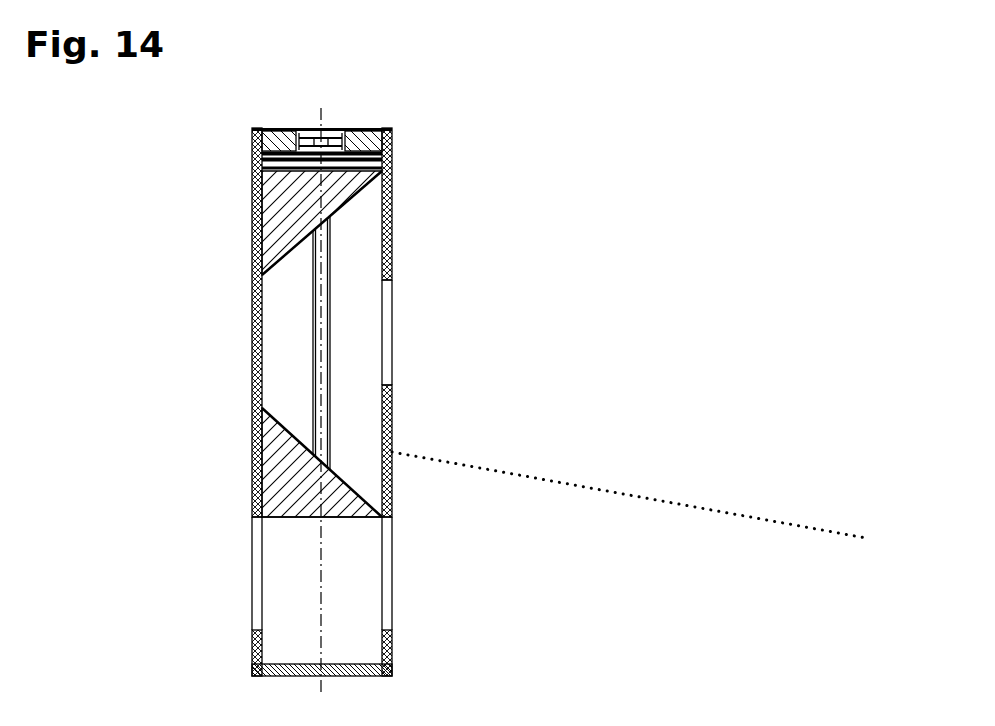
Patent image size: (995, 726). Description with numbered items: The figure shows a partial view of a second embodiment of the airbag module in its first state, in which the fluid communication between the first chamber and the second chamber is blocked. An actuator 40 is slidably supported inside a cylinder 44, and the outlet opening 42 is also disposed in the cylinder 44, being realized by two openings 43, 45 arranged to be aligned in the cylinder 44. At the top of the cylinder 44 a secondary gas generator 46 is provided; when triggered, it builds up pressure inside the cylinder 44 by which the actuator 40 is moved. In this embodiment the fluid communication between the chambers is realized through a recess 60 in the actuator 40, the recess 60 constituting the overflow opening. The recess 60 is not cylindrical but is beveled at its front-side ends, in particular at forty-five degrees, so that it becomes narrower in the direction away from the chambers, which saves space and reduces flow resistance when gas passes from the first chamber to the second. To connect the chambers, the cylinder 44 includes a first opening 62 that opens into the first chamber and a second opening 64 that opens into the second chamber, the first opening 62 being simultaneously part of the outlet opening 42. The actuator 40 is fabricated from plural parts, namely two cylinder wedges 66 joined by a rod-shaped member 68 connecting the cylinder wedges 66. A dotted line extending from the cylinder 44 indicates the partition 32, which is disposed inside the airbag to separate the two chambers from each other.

The partition 32 is at (784, 525).
The actuator 40 is at (278, 250).
The outlet opening 42 is at (280, 618).
The opening 43 is at (256, 577).
The cylinder 44 is at (254, 202).
The opening 45 is at (387, 609).
The secondary gas generator 46 is at (313, 130).
The recess 60 is at (365, 233).
The first opening 62 is at (387, 547).
The second opening 64 is at (387, 345).
The cylinder wedges 66 is at (350, 160).
The rod-shaped member 68 is at (313, 378).